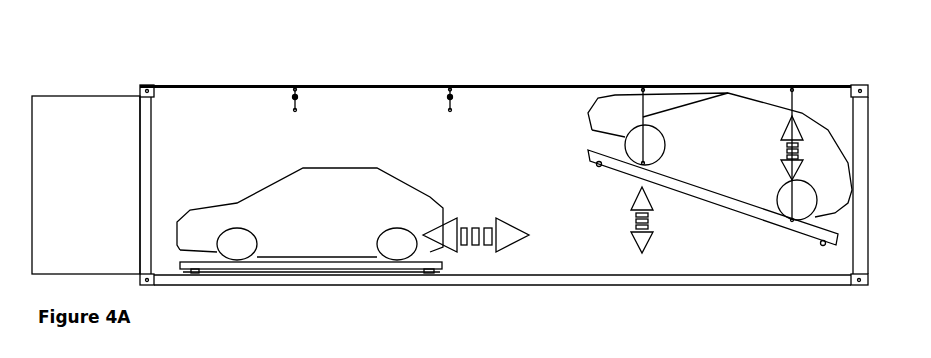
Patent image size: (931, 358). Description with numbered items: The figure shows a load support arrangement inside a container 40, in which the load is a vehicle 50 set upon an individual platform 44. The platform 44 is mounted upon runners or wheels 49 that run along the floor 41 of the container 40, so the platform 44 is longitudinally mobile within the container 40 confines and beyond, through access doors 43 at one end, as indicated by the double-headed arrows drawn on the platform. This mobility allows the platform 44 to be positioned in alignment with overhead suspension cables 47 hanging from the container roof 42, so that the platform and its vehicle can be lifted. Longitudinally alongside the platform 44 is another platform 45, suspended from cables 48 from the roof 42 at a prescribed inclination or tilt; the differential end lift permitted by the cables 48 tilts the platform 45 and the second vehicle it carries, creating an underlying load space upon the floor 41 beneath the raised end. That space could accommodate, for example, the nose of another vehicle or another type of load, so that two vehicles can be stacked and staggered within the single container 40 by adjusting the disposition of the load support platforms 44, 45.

The container 40 is at (365, 293).
The floor 41 is at (500, 279).
The container roof 42 is at (555, 87).
The access doors 43 is at (87, 130).
The platform 44 is at (273, 263).
The platform 45 is at (618, 164).
The overhead suspension cables 47 is at (450, 97).
The cables 48 is at (643, 117).
The runners or wheels 49 is at (422, 263).
The vehicle 50 is at (275, 212).